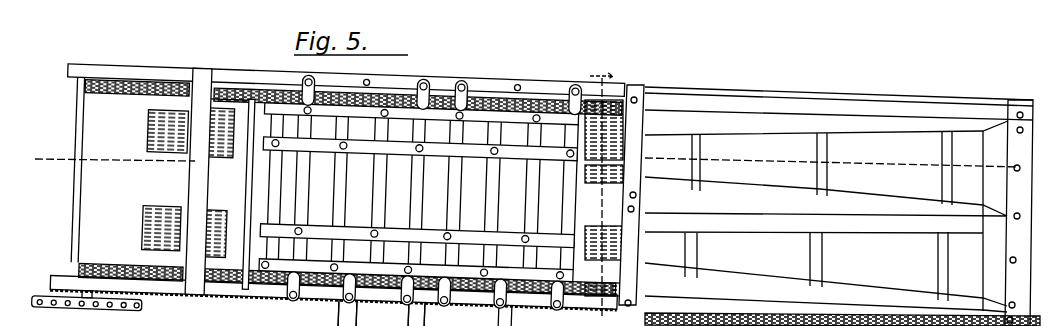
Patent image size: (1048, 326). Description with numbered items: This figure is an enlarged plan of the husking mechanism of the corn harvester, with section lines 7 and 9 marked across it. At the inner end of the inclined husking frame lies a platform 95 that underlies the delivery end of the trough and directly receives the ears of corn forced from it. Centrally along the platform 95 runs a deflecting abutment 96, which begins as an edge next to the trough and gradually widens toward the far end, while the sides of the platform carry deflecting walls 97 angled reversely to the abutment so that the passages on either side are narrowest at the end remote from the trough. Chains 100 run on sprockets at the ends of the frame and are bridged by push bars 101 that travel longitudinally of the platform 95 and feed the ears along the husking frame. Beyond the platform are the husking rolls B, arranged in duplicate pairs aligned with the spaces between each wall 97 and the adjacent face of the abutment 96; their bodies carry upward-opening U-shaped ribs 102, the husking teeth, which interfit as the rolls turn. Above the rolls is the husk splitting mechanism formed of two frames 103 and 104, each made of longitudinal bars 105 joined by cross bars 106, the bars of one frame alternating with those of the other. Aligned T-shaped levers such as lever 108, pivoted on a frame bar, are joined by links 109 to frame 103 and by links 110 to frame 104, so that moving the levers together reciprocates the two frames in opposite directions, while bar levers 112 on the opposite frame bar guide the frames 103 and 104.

The section line 7— 7 is at (521, 160).
The section line 9— 9 is at (601, 193).
The platform 95 is at (814, 266).
The deflecting abutment 96 is at (826, 196).
The deflecting walls 97 is at (842, 206).
The chains 100 is at (130, 93).
The push bars 101 is at (810, 264).
The U-shaped ribs 102 is at (100, 312).
The frame of husk splitting mechanism 103 is at (478, 115).
The frame of husk splitting mechanism 104 is at (435, 147).
The longitudinal bars 105 is at (550, 115).
The cross bars 106 is at (490, 192).
The T-shaped lever 108 is at (385, 300).
The links 109 is at (422, 297).
The links 110 is at (295, 285).
The bar levers 112 is at (397, 87).
The husking rolls B is at (150, 138).